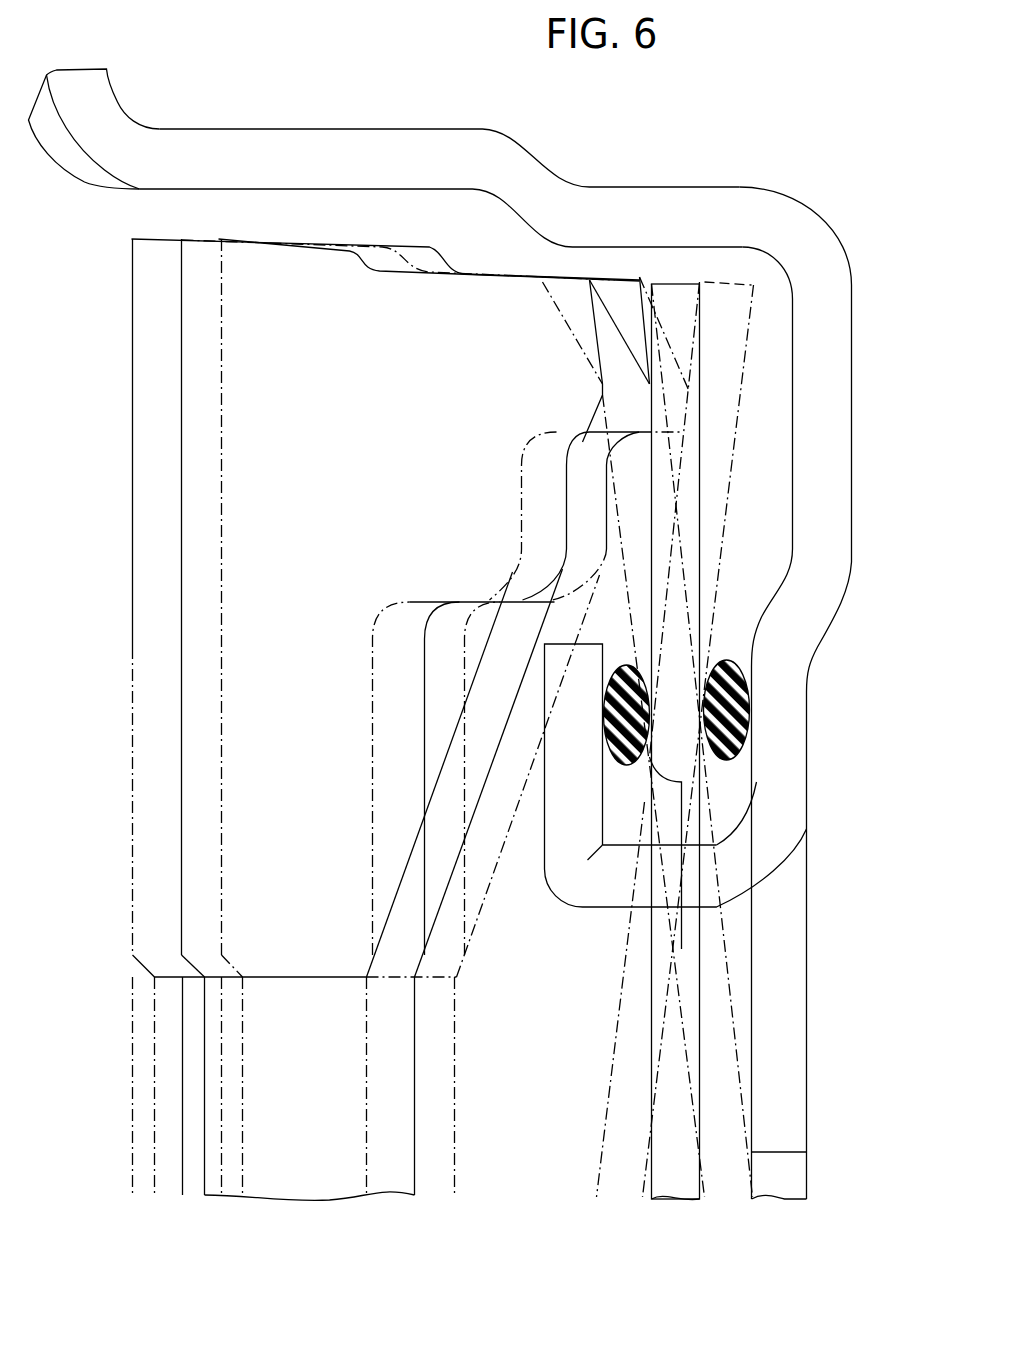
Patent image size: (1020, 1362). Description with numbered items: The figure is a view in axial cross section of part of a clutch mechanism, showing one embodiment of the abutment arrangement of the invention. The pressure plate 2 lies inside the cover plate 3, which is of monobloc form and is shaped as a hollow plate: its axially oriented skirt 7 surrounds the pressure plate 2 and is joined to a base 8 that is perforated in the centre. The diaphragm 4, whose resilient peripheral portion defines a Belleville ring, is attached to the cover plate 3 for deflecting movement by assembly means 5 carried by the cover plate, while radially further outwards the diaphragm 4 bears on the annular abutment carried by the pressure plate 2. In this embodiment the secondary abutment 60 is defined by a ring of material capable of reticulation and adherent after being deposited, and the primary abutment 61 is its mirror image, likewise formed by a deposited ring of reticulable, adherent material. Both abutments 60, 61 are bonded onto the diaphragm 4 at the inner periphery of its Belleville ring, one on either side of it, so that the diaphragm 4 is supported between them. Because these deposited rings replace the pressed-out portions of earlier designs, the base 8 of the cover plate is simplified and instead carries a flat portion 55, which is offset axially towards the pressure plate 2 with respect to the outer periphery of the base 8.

The pressure plate 2 is at (448, 294).
The cover plate 3 is at (384, 114).
The diaphragm 4 is at (676, 266).
The assembly means 5 is at (578, 922).
The skirt 7 is at (251, 126).
The base 8 is at (852, 283).
The flat portion 55 is at (808, 701).
The secondary abutment 60 is at (637, 765).
The primary abutment 61 is at (730, 775).